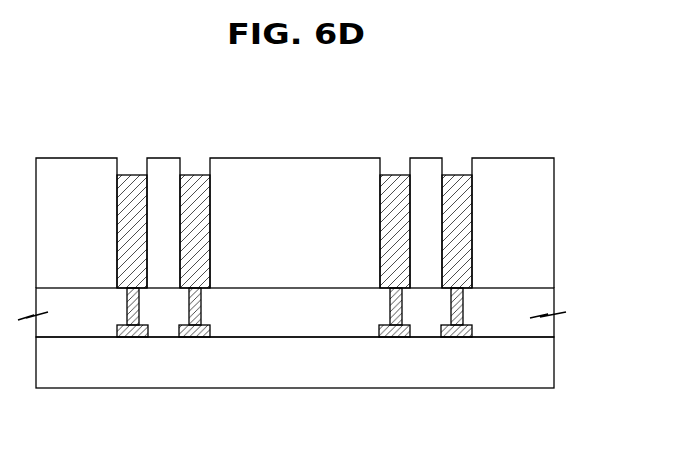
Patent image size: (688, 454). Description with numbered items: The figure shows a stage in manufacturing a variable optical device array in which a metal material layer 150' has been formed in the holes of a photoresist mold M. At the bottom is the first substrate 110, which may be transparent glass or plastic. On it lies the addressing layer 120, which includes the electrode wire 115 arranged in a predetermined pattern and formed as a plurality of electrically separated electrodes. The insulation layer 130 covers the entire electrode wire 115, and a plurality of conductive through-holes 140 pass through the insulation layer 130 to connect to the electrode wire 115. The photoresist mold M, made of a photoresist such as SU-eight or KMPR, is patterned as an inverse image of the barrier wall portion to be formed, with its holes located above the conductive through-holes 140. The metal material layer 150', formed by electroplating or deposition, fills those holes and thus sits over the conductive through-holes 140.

The first substrate 110 is at (554, 363).
The insulation layer 130 is at (554, 302).
The photoresist mold M is at (554, 225).
The metal material layer 150' is at (297, 202).
The conductive through-holes 140 is at (460, 308).
The electrode wire 115 is at (391, 333).
The addressing layer 120 is at (427, 338).